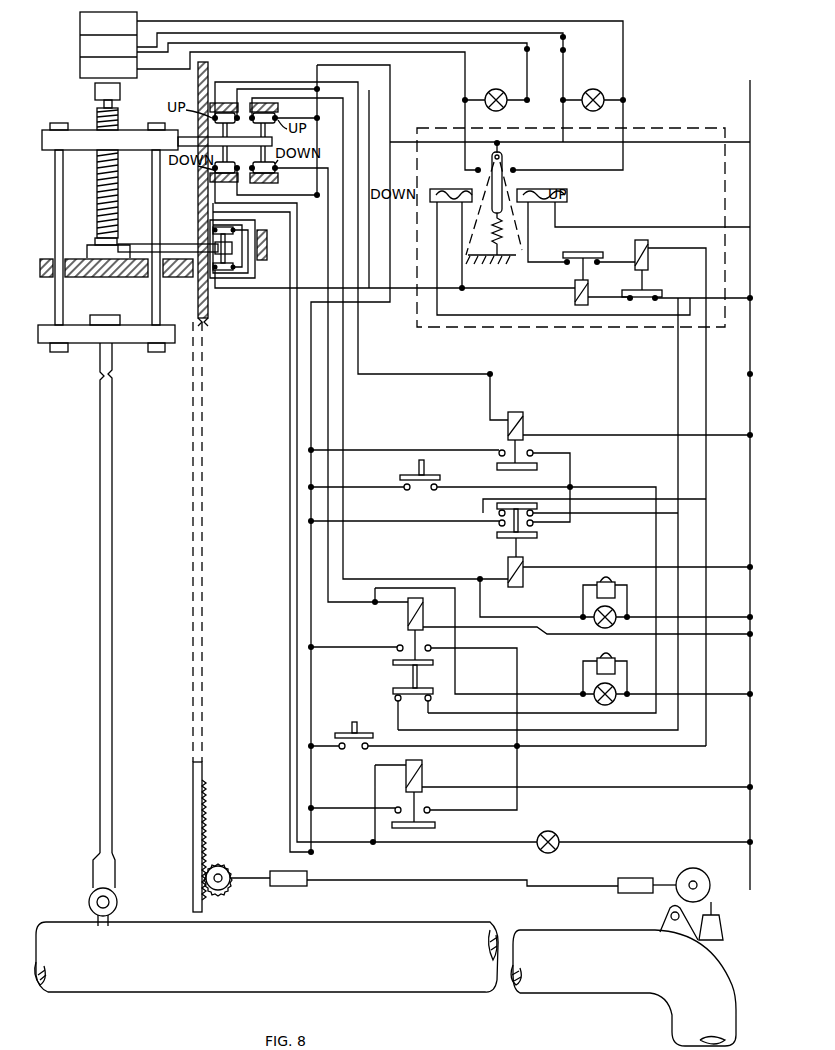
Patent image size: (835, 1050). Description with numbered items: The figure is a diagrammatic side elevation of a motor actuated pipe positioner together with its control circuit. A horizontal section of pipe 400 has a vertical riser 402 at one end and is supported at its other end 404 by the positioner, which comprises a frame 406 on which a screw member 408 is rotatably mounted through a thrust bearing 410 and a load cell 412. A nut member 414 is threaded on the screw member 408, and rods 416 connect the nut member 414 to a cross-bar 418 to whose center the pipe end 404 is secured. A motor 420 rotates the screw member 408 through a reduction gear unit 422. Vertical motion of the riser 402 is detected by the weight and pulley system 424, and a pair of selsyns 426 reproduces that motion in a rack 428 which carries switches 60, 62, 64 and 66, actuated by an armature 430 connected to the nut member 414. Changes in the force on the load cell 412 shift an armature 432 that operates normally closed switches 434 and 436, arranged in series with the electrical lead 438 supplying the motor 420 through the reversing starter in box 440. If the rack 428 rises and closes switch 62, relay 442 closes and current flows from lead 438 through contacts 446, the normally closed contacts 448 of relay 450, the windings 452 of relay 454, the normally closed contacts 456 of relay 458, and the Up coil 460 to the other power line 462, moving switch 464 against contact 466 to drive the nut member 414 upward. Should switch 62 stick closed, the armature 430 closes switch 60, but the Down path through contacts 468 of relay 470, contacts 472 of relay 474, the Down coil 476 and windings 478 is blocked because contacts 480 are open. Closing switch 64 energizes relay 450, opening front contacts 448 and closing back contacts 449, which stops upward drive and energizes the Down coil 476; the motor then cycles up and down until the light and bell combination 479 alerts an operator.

The switch 60 is at (225, 112).
The switch 62 is at (215, 178).
The switch 64 is at (264, 103).
The switch 66 is at (277, 174).
The horizontal section of pipe 400 is at (420, 987).
The vertical riser 402 is at (678, 1022).
The other end of pipe 404 is at (168, 984).
The frame 406 is at (106, 275).
The screw member 408 is at (97, 167).
The thrust bearing 410 is at (95, 240).
The load cell 412 is at (88, 250).
The nut member 414 is at (42, 138).
The rods 416 is at (55, 300).
The cross-bar 418 is at (80, 334).
The motor 420 is at (80, 47).
The reduction gear unit 422 is at (95, 92).
The weight and pulley system 424 is at (704, 886).
The selsyns 426 is at (287, 886).
The rack 428 is at (198, 210).
The armature 430 is at (248, 137).
The armature 432 is at (134, 242).
The normally closed switch 434 is at (215, 278).
The normally closed switch 436 is at (213, 233).
The electrical lead 438 is at (393, 96).
The motor reversing starter unit 440 is at (672, 131).
The relay 442 is at (424, 784).
The contacts of relay 442 446 is at (396, 808).
The front contacts of relay 450 448 is at (535, 518).
The back contacts of relay 450 449 is at (499, 525).
The relay 450 is at (508, 563).
The windings of relay 454 452 is at (649, 262).
The relay 454 is at (642, 240).
The contacts of relay 458 456 is at (563, 258).
The relay 458 is at (581, 305).
The Up coil 460 is at (567, 192).
The other power line 462 is at (750, 206).
The switch 464 is at (500, 156).
The contact 466 is at (516, 168).
The contacts of relay 470 468 is at (534, 452).
The relay 470 is at (524, 418).
The contacts of relay 474 472 is at (393, 694).
The relay 474 is at (416, 598).
The Down coil 476 is at (437, 189).
The windings of relay 458 478 is at (589, 295).
The light and bell combination 479 is at (583, 587).
The contacts of relay 454 480 is at (656, 300).